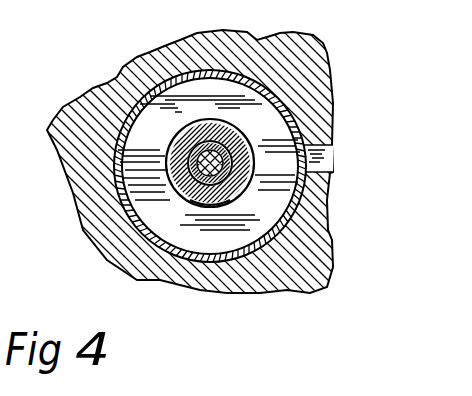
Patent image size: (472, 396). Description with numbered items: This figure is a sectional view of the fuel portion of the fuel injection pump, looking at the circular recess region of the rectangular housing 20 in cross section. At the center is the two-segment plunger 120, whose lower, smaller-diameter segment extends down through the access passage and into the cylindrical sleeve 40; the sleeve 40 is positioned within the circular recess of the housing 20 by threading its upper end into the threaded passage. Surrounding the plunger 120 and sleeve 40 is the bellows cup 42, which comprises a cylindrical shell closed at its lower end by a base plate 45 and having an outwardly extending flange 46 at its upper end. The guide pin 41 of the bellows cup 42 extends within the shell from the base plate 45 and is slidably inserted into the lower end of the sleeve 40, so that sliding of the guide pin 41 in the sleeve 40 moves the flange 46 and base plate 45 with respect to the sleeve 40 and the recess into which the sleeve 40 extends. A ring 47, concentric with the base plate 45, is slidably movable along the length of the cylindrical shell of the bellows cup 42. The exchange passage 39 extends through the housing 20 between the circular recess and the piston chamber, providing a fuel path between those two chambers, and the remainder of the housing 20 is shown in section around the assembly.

The housing 20 is at (302, 274).
The exchange passage 39 is at (332, 153).
The cylindrical sleeve 40 is at (242, 195).
The guide pin 41 is at (232, 163).
The bellows cup 42 is at (296, 121).
The base plate 45 is at (220, 207).
The flange 46 is at (212, 116).
The ring 47 is at (214, 71).
The plunger 120 is at (235, 128).